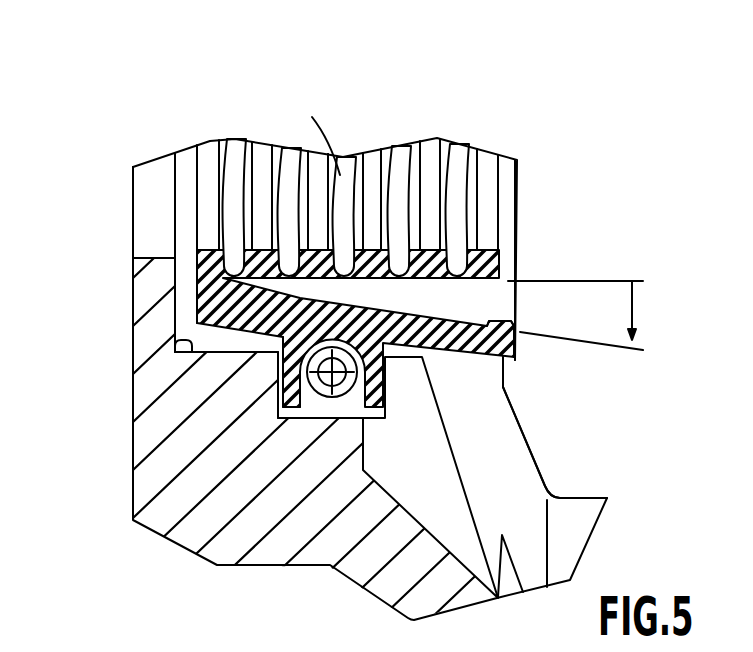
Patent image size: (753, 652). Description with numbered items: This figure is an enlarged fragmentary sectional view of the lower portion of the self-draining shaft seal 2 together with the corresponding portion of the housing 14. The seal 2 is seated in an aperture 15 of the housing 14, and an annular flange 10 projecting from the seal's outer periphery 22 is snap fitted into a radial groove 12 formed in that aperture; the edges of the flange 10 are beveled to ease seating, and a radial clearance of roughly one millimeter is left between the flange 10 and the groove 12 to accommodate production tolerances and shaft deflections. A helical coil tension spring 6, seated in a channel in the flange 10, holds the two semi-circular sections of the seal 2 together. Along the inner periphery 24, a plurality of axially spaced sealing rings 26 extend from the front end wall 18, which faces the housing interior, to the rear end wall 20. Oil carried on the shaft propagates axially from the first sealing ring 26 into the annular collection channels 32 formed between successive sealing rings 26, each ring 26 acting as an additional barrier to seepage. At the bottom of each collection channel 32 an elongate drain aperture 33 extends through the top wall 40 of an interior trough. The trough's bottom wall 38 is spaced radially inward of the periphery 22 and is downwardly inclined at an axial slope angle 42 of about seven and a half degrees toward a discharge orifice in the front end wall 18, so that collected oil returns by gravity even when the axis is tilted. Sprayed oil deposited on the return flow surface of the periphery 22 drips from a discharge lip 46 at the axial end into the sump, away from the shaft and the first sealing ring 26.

The self-draining shaft seal 2 is at (197, 302).
The helical coil tension spring 6 is at (343, 400).
The annular flange 10 is at (280, 383).
The radial groove 12 is at (307, 400).
The housing 14 is at (177, 508).
The aperture 15 is at (177, 342).
The front end wall 18 is at (507, 214).
The rear end wall 20 is at (182, 205).
The outer periphery 22 is at (195, 279).
The inner periphery 24 is at (350, 172).
The sealing rings 26 is at (200, 150).
The collection channels 32 is at (216, 160).
The drain aperture 33 is at (232, 168).
The bottom wall 38 is at (520, 332).
The top wall 40 is at (433, 282).
The axial slope angle 42 is at (635, 308).
The discharge lip 46 is at (513, 360).